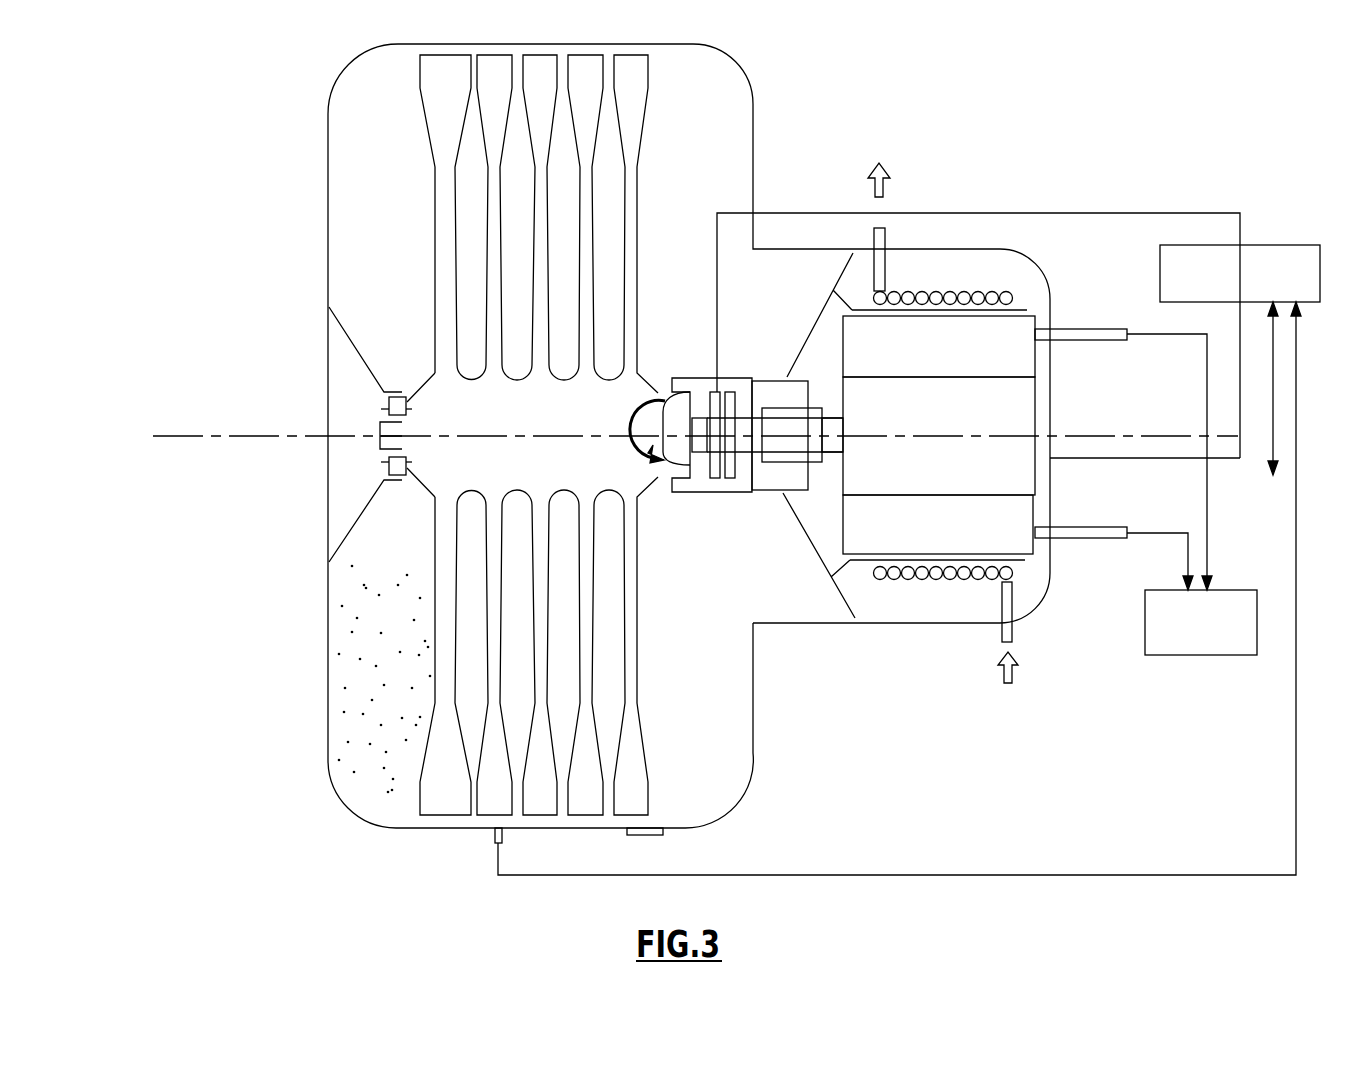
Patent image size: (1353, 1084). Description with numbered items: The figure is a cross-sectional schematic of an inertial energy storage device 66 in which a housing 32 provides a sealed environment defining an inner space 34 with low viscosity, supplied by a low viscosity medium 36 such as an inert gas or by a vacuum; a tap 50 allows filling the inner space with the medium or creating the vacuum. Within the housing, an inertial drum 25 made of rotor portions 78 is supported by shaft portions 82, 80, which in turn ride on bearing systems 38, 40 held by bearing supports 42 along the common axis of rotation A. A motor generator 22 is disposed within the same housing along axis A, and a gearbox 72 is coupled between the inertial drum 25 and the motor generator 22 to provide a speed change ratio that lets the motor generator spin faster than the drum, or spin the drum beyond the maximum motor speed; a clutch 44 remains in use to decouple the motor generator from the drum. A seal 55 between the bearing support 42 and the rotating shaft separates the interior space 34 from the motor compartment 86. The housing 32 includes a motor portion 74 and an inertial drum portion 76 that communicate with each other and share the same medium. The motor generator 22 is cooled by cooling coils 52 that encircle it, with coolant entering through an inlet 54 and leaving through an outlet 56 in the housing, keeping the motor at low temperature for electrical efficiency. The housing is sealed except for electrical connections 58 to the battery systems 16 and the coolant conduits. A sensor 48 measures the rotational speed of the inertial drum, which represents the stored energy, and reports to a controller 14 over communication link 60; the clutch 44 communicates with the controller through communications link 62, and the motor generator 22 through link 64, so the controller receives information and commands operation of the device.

The inertial energy storage device 66 is at (700, 477).
The inner space 34 is at (403, 233).
The bearing 38 is at (396, 397).
The shaft portion 82 is at (395, 441).
The axis of rotation A is at (182, 438).
The low viscosity medium 36 is at (338, 627).
The housing 32 is at (335, 810).
The rotors 78 is at (497, 565).
The inertial drum 25 is at (503, 689).
The sensor 48 is at (495, 840).
The tap 50 is at (660, 835).
The bearing 40 is at (683, 378).
The seal 55 is at (701, 392).
The clutch 44 is at (732, 393).
The gearbox 72 is at (793, 388).
The bearing support 42 is at (774, 492).
The shaft portion 80 is at (677, 458).
The communications link 62 is at (980, 213).
The link 64 is at (1166, 456).
The motor portion 74 is at (897, 623).
The inertial drum portion 76 is at (753, 722).
The outlet 56 is at (885, 183).
The motor compartment 86 is at (975, 276).
The cooling coils 52 is at (931, 586).
The inlet 54 is at (1008, 686).
The motor generator 22 is at (1019, 533).
The electrical connections 58 is at (1080, 328).
The controller 14 is at (1273, 245).
The battery systems 16 is at (1235, 590).
The communication link 60 is at (1023, 875).